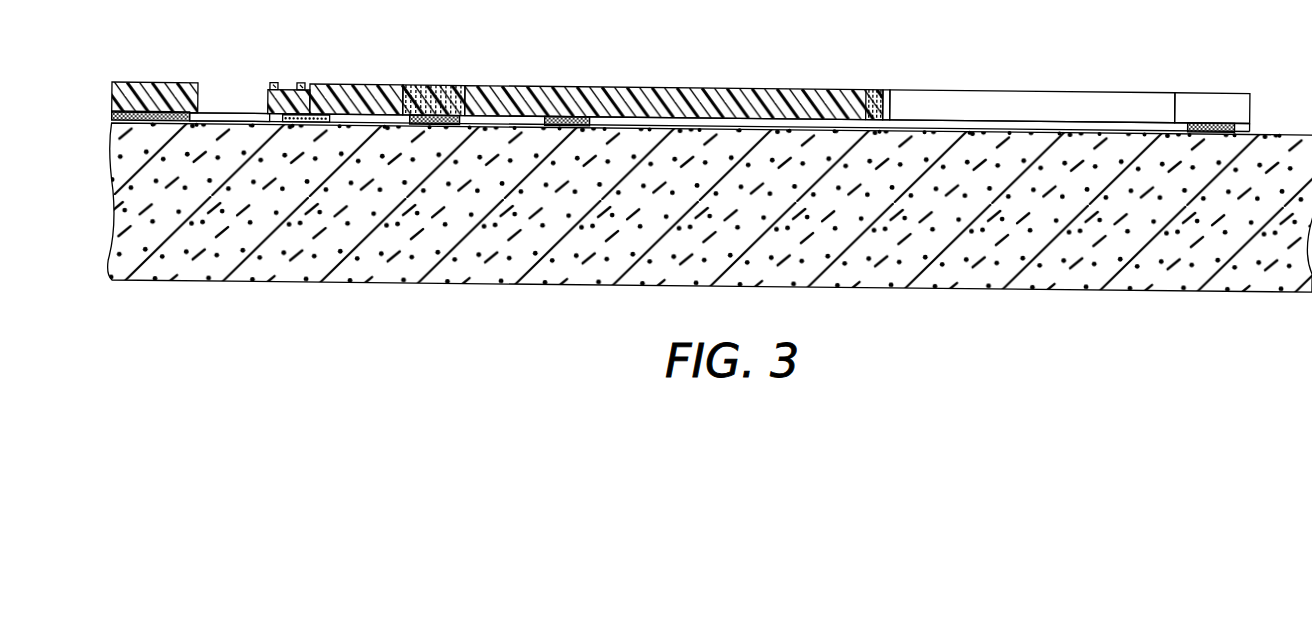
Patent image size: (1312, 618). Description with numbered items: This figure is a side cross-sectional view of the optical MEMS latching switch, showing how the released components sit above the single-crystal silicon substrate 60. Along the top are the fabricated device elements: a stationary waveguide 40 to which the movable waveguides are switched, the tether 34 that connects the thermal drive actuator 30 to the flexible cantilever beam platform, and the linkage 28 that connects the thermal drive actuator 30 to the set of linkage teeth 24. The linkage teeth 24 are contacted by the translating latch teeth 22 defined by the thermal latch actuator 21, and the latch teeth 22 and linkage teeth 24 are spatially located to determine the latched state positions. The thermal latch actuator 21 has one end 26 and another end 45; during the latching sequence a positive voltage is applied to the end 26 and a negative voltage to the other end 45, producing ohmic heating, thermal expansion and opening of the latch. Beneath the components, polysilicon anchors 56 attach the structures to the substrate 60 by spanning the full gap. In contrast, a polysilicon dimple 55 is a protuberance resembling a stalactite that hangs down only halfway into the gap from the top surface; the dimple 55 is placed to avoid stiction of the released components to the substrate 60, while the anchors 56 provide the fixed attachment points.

The thermal latch actuator 21 is at (958, 80).
The latch teeth 22 is at (892, 89).
The linkage teeth 24 is at (875, 79).
The end of latch actuator 26 is at (1213, 86).
The linkage 28 is at (735, 82).
The thermal drive actuator 30 is at (450, 80).
The tether 34 is at (363, 80).
The stationary waveguide 40 is at (137, 80).
The other end of latch actuator 45 is at (567, 80).
The polysilicon dimple 55 is at (273, 140).
The polysilicon anchor 56 is at (110, 117).
The substrate 60 is at (115, 255).